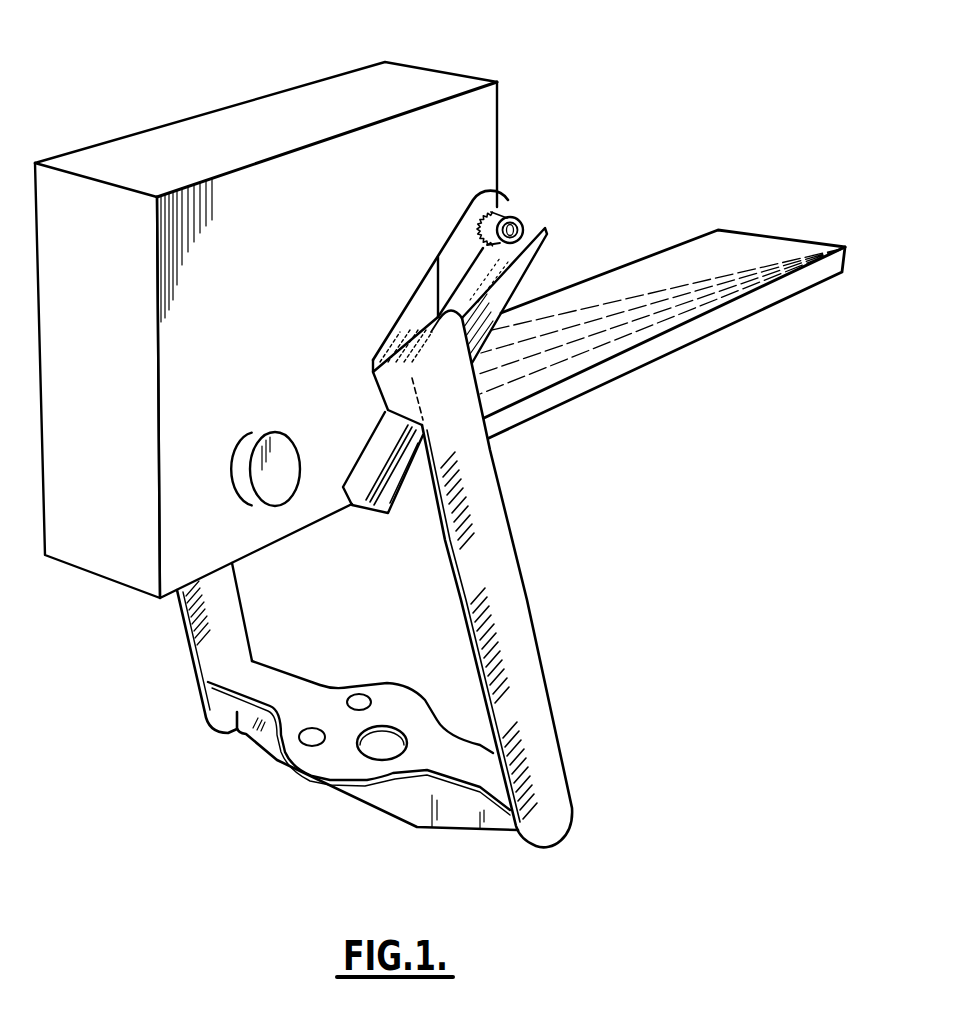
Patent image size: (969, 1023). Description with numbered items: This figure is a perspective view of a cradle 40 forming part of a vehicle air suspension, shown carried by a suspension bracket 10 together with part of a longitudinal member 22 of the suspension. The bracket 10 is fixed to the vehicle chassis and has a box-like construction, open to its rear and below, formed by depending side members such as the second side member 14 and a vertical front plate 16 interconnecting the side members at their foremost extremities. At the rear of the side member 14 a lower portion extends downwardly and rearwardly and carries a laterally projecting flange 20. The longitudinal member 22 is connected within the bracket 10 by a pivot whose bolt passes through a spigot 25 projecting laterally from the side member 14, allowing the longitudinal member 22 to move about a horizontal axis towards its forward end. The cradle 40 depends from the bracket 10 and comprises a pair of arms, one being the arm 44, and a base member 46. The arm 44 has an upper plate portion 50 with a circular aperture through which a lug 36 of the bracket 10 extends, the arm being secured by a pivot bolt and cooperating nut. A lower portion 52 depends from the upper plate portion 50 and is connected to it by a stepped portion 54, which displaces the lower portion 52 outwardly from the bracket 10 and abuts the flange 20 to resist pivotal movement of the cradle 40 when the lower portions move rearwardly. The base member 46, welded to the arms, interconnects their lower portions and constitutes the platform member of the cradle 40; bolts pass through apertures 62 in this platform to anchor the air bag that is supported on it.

The bracket 10 is at (179, 82).
The second side member 14 is at (325, 306).
The vertical front plate 16 is at (112, 372).
The flange 20 is at (375, 513).
The longitudinal member 22 is at (732, 250).
The spigot 25 is at (247, 448).
The lug 36 is at (514, 211).
The cradle 40 is at (584, 697).
The arm 44 is at (565, 258).
The base member 46 is at (405, 717).
The upper plate portion 50 is at (488, 188).
The lower portion 52 is at (520, 612).
The stepped portion 54 is at (373, 369).
The apertures 62 is at (360, 695).